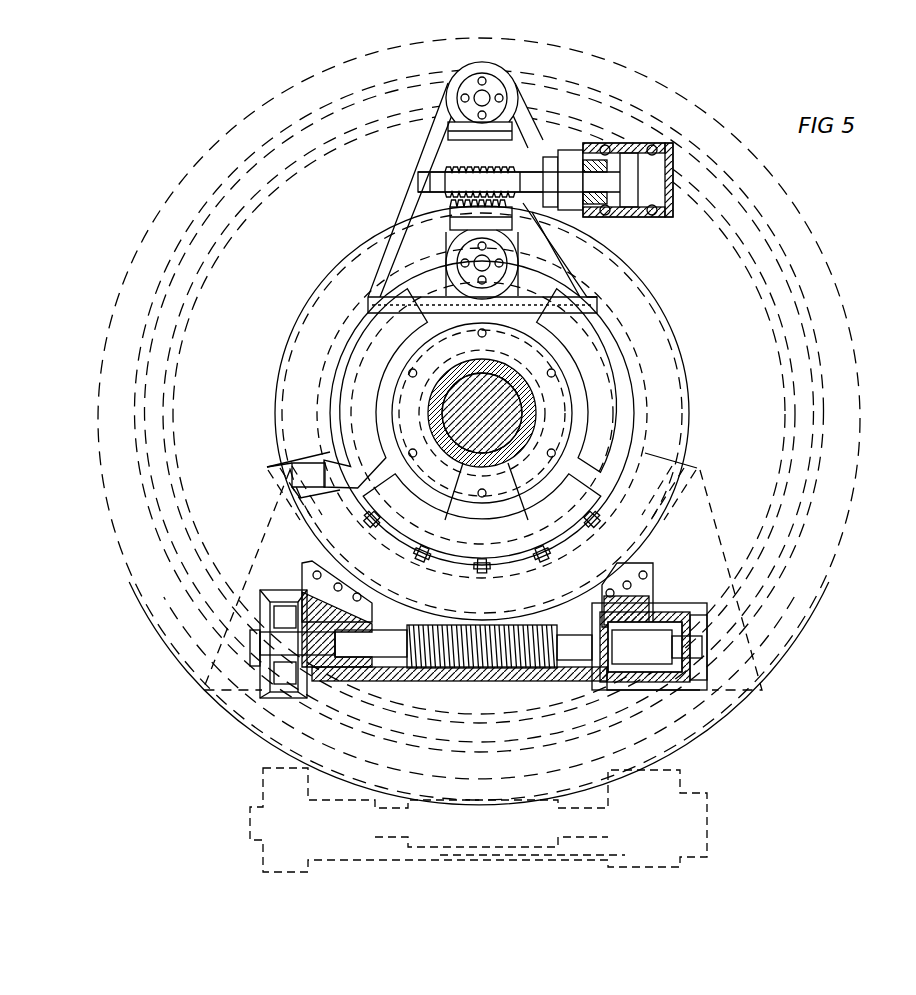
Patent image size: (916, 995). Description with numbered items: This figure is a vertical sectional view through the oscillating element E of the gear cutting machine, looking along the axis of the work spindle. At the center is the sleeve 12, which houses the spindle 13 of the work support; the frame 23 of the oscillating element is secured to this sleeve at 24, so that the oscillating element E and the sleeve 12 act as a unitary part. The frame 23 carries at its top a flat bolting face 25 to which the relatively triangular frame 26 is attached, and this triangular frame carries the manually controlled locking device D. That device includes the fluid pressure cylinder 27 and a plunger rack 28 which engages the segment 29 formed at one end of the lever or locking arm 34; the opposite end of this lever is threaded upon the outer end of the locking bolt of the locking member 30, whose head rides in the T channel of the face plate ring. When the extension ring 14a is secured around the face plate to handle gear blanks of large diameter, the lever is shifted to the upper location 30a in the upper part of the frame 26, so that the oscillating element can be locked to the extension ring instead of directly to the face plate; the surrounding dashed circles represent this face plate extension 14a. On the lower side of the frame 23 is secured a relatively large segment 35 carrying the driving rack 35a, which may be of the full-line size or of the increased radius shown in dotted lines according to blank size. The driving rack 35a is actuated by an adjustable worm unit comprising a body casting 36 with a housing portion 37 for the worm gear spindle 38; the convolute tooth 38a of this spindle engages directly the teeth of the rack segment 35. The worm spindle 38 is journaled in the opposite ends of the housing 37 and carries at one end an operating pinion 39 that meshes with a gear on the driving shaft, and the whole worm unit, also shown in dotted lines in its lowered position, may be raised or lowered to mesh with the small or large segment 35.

The sleeve 12 is at (522, 504).
The spindle 13 is at (468, 488).
The extension ring 14a is at (110, 497).
The frame 23 is at (377, 412).
The securing point 24 is at (556, 373).
The flat bolting face 25 is at (373, 347).
The triangular frame 26 is at (577, 253).
The fluid pressure cylinder 27 is at (668, 160).
The plunger rack 28 is at (488, 180).
The segment 29 is at (452, 222).
The locking member 30 is at (508, 252).
The upper location 30a is at (462, 90).
The lever or locking arm 34 is at (455, 238).
The segment 35 is at (337, 490).
The driving rack 35a is at (500, 628).
The body casting 36 is at (652, 586).
The housing portion 37 is at (553, 686).
The worm gear spindle 38 is at (426, 645).
The convolute tooth 38a is at (500, 672).
The operating pinion 39 is at (268, 700).
The manually controlled locking device D is at (348, 187).
The oscillating element E is at (647, 300).